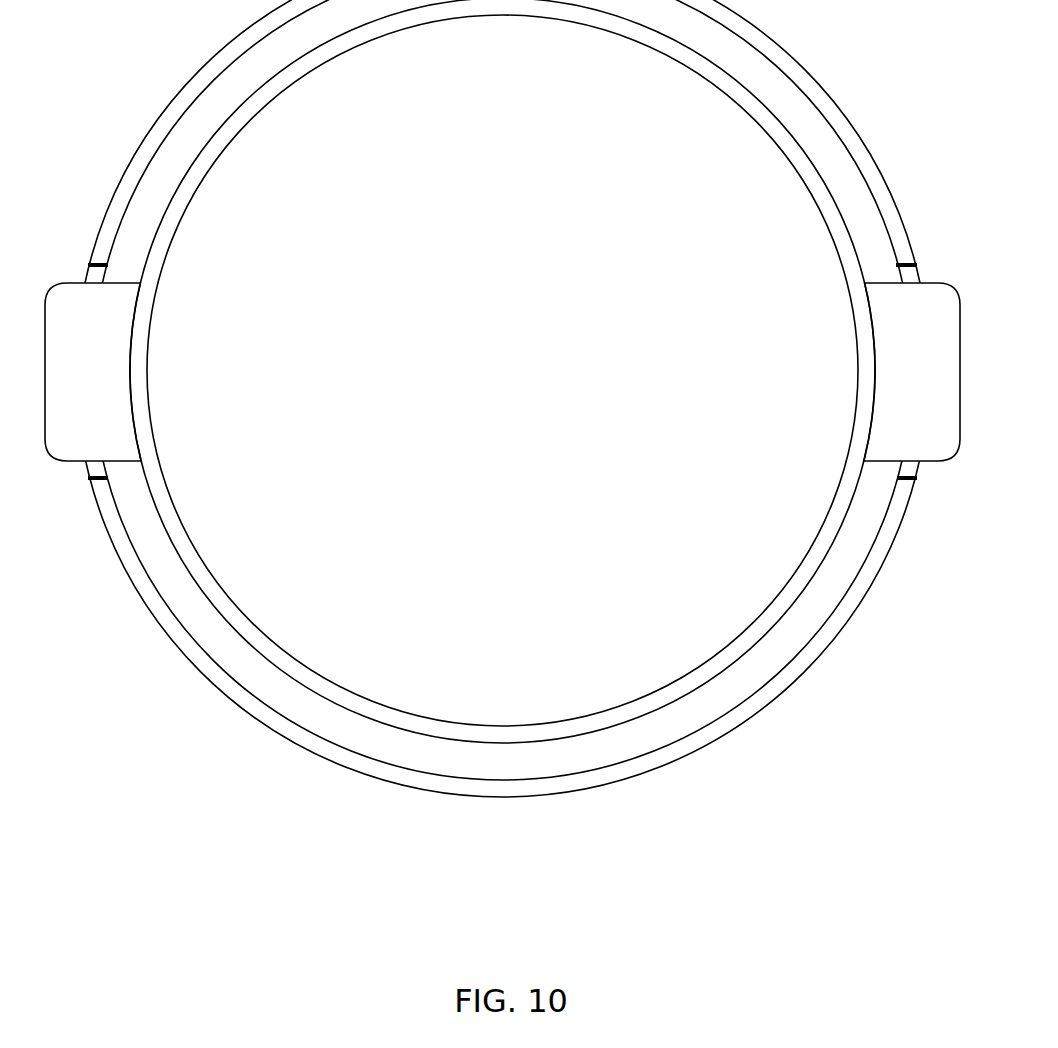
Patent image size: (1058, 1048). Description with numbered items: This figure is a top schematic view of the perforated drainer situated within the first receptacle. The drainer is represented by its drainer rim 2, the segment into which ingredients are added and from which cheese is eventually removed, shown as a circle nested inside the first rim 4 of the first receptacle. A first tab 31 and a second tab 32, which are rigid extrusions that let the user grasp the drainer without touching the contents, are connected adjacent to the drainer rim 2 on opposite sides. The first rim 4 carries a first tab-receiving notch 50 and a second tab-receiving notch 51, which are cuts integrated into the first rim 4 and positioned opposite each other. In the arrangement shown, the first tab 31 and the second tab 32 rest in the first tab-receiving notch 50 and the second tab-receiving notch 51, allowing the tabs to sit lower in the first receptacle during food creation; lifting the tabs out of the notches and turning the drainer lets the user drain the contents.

The drainer rim 2 is at (267, 83).
The first rim 4 is at (718, 726).
The first tab 31 is at (70, 389).
The second tab 32 is at (897, 389).
The first tab-receiving notch 50 is at (93, 467).
The second tab-receiving notch 51 is at (906, 278).